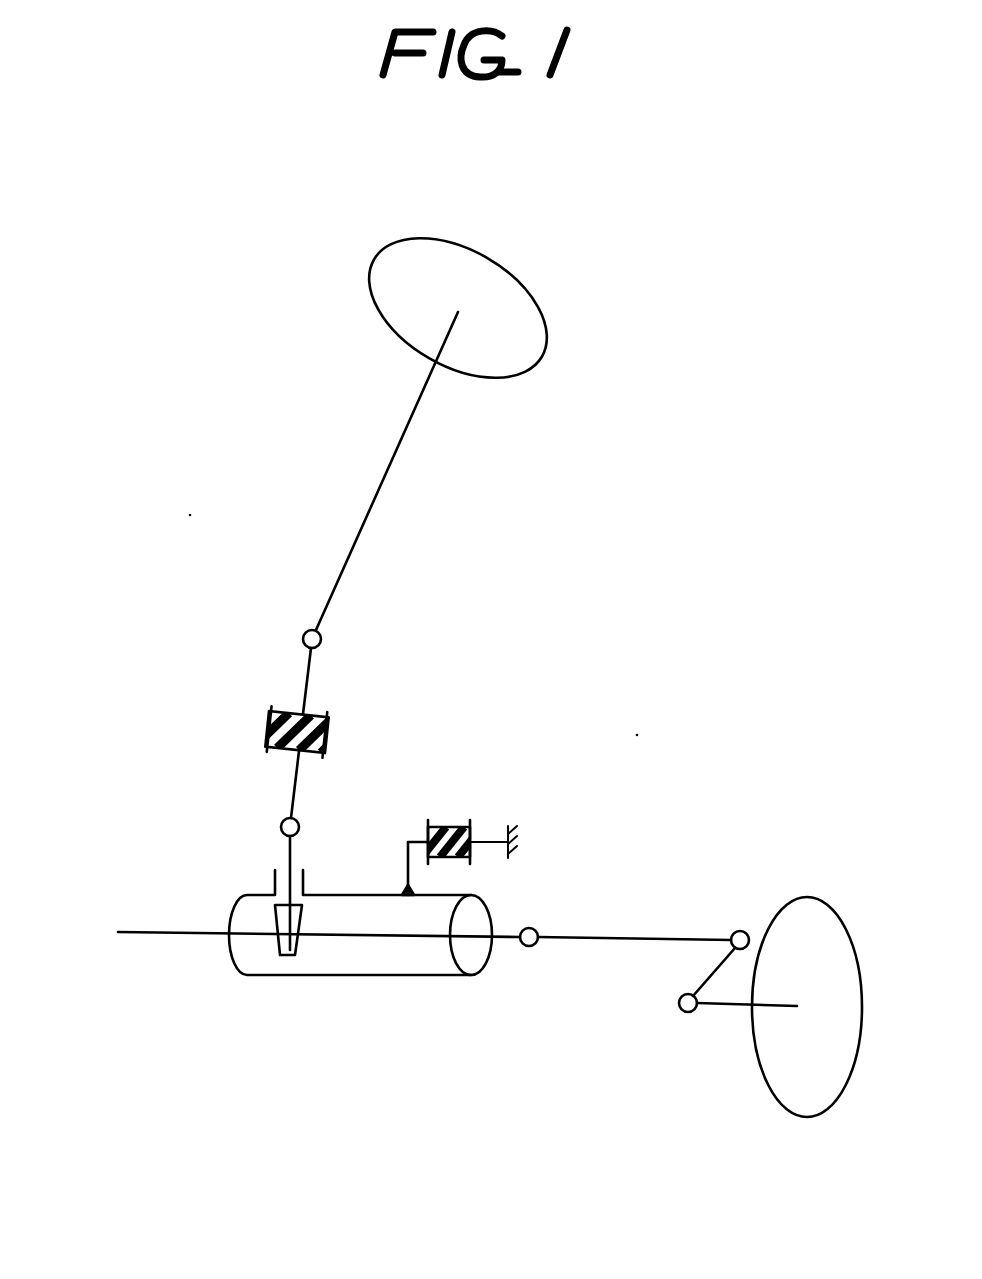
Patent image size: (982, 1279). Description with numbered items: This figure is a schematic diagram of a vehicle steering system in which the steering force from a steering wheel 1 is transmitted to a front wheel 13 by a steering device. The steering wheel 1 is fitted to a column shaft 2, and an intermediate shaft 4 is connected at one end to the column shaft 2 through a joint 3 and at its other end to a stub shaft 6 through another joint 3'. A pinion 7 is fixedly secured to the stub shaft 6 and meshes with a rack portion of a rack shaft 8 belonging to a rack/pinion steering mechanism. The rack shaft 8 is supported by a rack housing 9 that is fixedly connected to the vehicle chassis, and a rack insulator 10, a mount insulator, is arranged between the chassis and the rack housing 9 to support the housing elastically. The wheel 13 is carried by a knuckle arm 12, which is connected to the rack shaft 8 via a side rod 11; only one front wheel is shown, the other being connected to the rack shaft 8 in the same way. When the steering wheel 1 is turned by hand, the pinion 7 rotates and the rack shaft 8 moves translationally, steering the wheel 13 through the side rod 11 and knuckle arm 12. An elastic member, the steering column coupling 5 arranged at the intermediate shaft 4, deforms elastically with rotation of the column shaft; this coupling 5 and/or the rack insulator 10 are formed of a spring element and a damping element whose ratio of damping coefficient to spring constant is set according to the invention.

The steering wheel 1 is at (533, 290).
The column shaft 2 is at (383, 485).
The joint 3 is at (282, 611).
The intermediate shaft 4 is at (308, 676).
The steering column coupling 5 is at (329, 738).
The joint 3' is at (251, 807).
The stub shaft 6 is at (290, 853).
The pinion 7 is at (297, 945).
The rack shaft 8 is at (163, 935).
The rack housing 9 is at (395, 978).
The rack insulator 10 is at (450, 822).
The side rod 11 is at (610, 935).
The knuckle arm 12 is at (710, 975).
The front wheel 13 is at (833, 910).